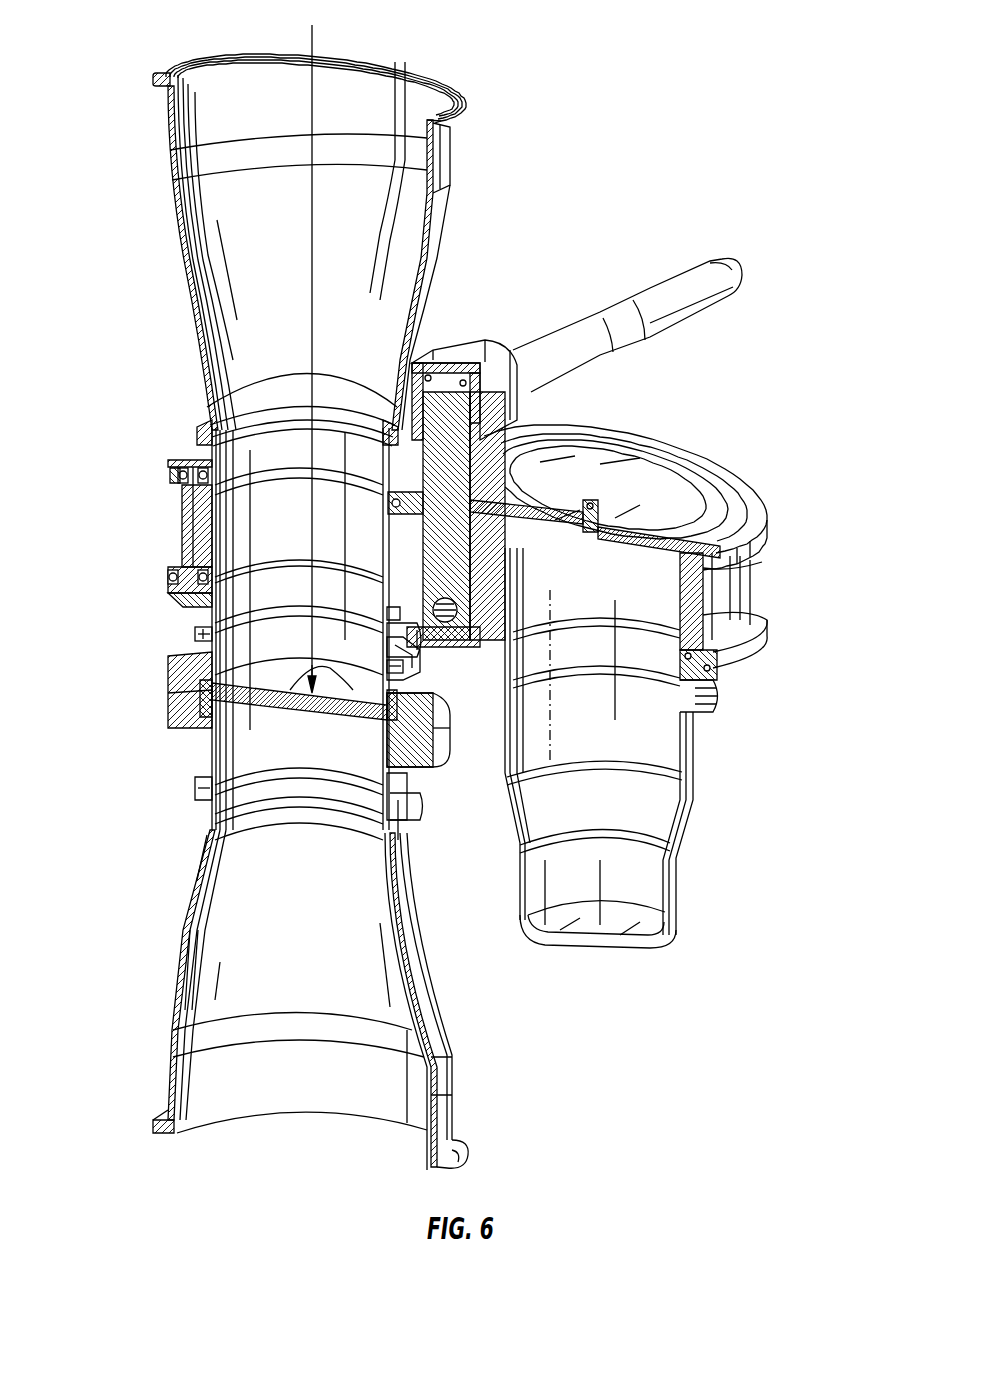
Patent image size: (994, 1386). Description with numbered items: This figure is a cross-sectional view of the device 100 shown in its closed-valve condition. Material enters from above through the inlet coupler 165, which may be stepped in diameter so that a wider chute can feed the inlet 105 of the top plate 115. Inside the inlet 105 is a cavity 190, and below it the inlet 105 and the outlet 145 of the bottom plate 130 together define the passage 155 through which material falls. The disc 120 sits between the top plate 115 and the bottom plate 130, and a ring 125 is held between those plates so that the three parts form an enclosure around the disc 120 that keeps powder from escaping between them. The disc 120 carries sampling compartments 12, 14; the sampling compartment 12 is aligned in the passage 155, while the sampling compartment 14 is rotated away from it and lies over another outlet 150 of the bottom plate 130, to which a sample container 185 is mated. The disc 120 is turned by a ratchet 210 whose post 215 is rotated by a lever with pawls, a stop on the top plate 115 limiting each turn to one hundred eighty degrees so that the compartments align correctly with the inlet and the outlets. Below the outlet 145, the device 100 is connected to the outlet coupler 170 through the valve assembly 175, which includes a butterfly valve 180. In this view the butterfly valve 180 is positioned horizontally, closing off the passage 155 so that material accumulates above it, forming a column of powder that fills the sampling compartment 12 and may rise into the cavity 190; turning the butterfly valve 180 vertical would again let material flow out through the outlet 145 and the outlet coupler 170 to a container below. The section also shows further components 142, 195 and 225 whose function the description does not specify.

The device 100 is at (122, 58).
The inlet coupler 165 is at (166, 152).
The cavity 190 is at (290, 454).
The inlet 105 is at (233, 452).
The passage 155 is at (113, 420).
The sampling compartment 12 is at (240, 545).
The bottom plate 130 is at (213, 602).
The outlet 145 is at (200, 635).
The valve assembly 175 is at (160, 657).
The butterfly valve 180 is at (217, 719).
The outlet coupler 170 is at (195, 902).
The ratchet 210 is at (480, 340).
The post 215 is at (485, 433).
The disc 120 is at (483, 549).
The ball 225 is at (447, 642).
The pin 142 is at (598, 500).
The top plate 115 is at (690, 472).
The ring 125 is at (667, 609).
The sampling compartment 14 is at (633, 649).
The container assembly 195 is at (830, 557).
The outlet 150 is at (690, 708).
The sample container 185 is at (687, 832).